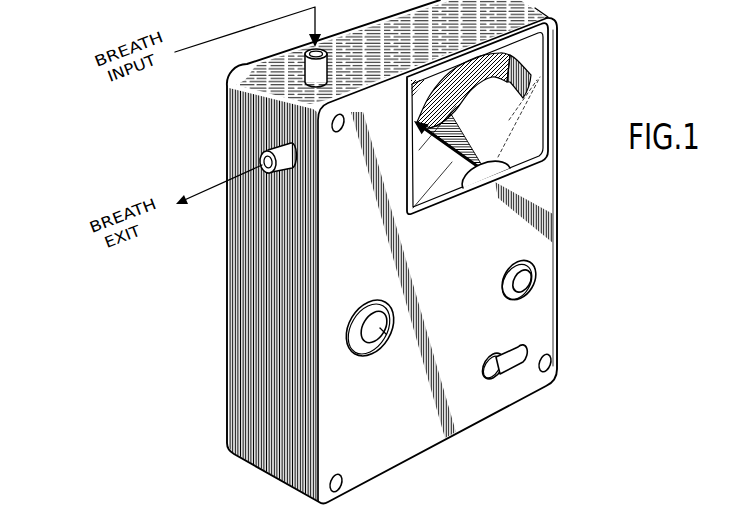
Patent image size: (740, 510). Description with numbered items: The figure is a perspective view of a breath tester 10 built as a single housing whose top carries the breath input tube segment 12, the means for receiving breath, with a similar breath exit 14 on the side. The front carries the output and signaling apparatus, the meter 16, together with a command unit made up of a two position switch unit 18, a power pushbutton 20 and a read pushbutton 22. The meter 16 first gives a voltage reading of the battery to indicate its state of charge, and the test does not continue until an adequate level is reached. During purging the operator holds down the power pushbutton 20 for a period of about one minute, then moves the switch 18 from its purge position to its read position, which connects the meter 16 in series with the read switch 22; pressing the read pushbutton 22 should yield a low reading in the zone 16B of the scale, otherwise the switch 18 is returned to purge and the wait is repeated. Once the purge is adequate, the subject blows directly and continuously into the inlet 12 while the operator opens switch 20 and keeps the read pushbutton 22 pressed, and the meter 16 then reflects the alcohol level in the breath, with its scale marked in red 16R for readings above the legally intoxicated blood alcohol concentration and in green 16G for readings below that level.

The breath tester 10 is at (531, 405).
The input tube segment 12 is at (328, 66).
The breath exit 14 is at (288, 160).
The meter 16 is at (509, 113).
The green scale zone 16G is at (481, 64).
The red scale zone 16R is at (534, 81).
The low-reading zone 16B is at (474, 150).
The two position switch unit 18 is at (525, 357).
The power pushbutton 20 is at (383, 334).
The read pushbutton 22 is at (532, 287).